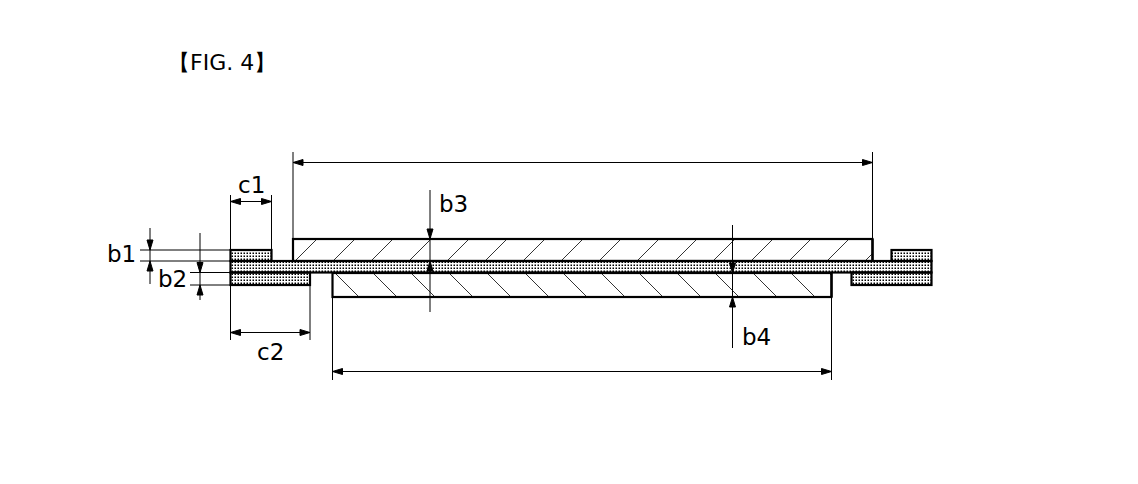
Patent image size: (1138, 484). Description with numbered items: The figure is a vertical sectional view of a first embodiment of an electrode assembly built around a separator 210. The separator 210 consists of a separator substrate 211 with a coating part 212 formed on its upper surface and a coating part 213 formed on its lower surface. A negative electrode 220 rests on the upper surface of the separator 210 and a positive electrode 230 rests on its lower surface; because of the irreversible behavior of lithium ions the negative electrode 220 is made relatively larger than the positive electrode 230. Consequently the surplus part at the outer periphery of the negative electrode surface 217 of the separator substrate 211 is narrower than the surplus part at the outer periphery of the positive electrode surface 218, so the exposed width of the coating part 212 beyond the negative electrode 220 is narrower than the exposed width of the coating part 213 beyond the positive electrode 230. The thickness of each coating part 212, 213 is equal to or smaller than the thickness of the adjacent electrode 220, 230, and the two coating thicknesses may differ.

The separator 210 is at (621, 270).
The separator substrate 211 is at (230, 252).
The coating part 212 is at (251, 256).
The coating part 213 is at (247, 278).
The negative electrode surface 217 is at (886, 241).
The positive electrode surface 218 is at (845, 289).
The negative electrode 220 is at (577, 250).
The positive electrode 230 is at (577, 283).